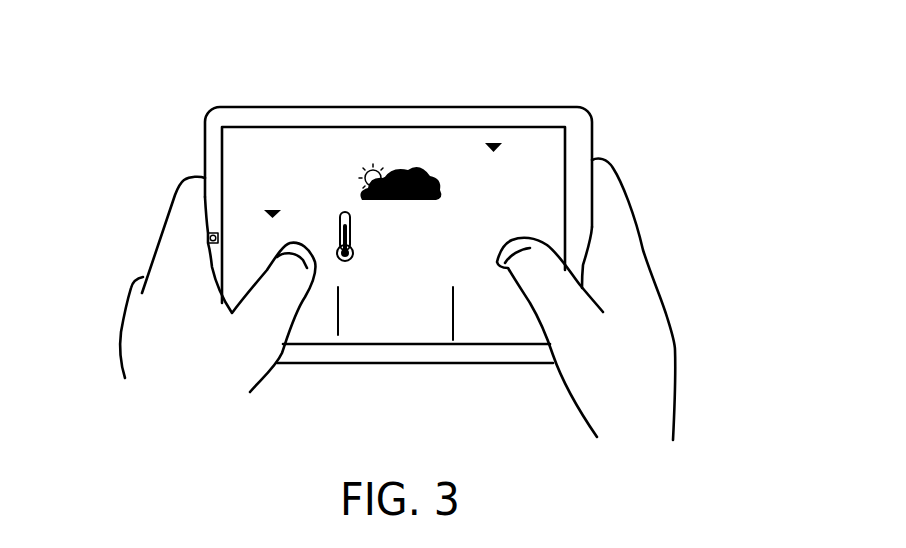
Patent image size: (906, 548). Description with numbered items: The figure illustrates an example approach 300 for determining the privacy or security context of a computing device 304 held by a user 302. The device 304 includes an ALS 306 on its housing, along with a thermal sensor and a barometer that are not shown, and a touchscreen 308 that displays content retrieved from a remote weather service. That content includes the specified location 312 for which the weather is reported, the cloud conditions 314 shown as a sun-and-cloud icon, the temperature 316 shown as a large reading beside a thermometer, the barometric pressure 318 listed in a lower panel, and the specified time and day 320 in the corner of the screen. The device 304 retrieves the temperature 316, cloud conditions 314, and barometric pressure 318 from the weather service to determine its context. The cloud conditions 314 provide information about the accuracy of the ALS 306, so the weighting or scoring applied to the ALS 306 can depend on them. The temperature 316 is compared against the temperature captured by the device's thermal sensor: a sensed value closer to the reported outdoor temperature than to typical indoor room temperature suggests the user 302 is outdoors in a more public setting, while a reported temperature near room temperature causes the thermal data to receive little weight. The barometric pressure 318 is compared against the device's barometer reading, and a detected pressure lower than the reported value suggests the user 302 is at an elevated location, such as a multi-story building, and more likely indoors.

The example approach 300 is at (710, 127).
The user 302 is at (675, 350).
The computing device 304 is at (205, 145).
The ALS 306 is at (203, 233).
The touchscreen 308 is at (308, 344).
The location indicator 312 is at (333, 132).
The cloud conditions 314 is at (435, 177).
The temperature 316 is at (460, 240).
The barometric pressure 318 is at (465, 315).
The time and day 320 is at (247, 153).